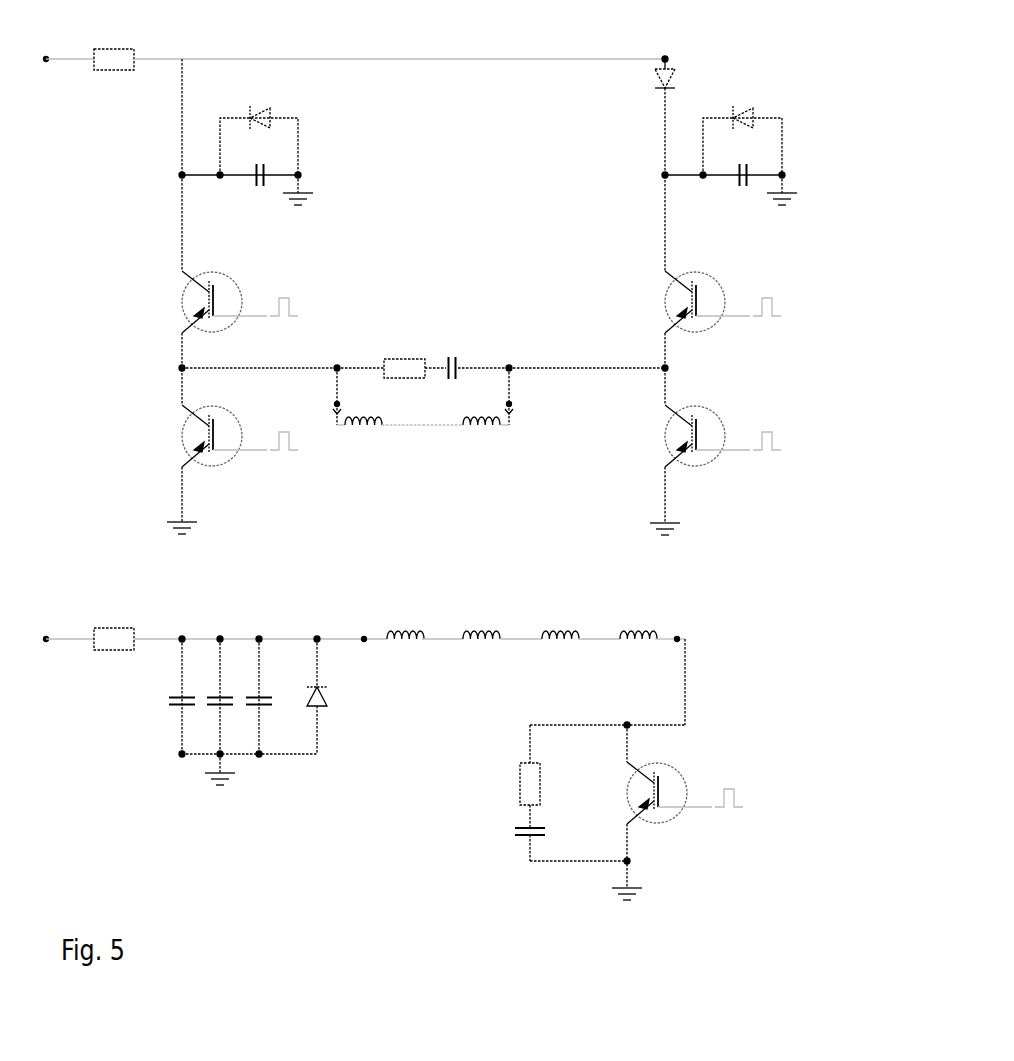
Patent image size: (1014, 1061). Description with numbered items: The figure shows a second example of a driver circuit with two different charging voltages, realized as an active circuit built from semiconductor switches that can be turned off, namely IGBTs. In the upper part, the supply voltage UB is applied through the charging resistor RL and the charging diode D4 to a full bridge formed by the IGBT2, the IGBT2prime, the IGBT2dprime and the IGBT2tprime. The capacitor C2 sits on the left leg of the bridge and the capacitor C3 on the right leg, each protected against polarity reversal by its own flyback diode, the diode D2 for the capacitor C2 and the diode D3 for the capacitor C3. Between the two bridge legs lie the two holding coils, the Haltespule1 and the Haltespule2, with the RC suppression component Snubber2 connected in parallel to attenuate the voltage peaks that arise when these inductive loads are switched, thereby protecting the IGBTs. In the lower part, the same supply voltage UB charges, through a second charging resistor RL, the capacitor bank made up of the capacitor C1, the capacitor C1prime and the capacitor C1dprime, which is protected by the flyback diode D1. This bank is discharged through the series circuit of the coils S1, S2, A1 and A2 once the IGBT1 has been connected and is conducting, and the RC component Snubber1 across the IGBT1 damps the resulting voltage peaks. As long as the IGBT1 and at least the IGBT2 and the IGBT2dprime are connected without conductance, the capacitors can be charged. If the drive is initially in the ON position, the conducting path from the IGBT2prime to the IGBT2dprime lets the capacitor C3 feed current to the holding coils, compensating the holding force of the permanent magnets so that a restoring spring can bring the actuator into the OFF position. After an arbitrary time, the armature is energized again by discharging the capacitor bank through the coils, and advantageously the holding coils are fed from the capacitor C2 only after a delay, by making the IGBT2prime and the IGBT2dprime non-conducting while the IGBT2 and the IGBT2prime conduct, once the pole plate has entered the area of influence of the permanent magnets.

The charging voltage UB is at (86, 370).
The charging resistor RL is at (114, 340).
The charging diode D4 is at (674, 60).
The flyback diode D2 is at (282, 131).
The capacitor C2 is at (247, 172).
The flyback diode D3 is at (766, 131).
The capacitor C3 is at (731, 172).
The IGBT IGBT2 is at (240, 315).
The IGBT IGBT2prime is at (240, 449).
The IGBT IGBT2dprime is at (723, 315).
The IGBT IGBT2tprime is at (723, 449).
The RC suppression component Snubber2 is at (423, 356).
The holding coil Haltespule1 is at (372, 413).
The holding coil Haltespule2 is at (474, 413).
The capacitor C1 is at (187, 696).
The capacitor C1prime is at (228, 696).
The capacitor C1dprime is at (269, 696).
The flyback diode D1 is at (387, 696).
The coil S1 is at (405, 623).
The coil S2 is at (481, 623).
The coil A1 is at (560, 623).
The coil A2 is at (638, 623).
The RC suppression component Snubber1 is at (530, 793).
The IGBT IGBT1 is at (685, 807).